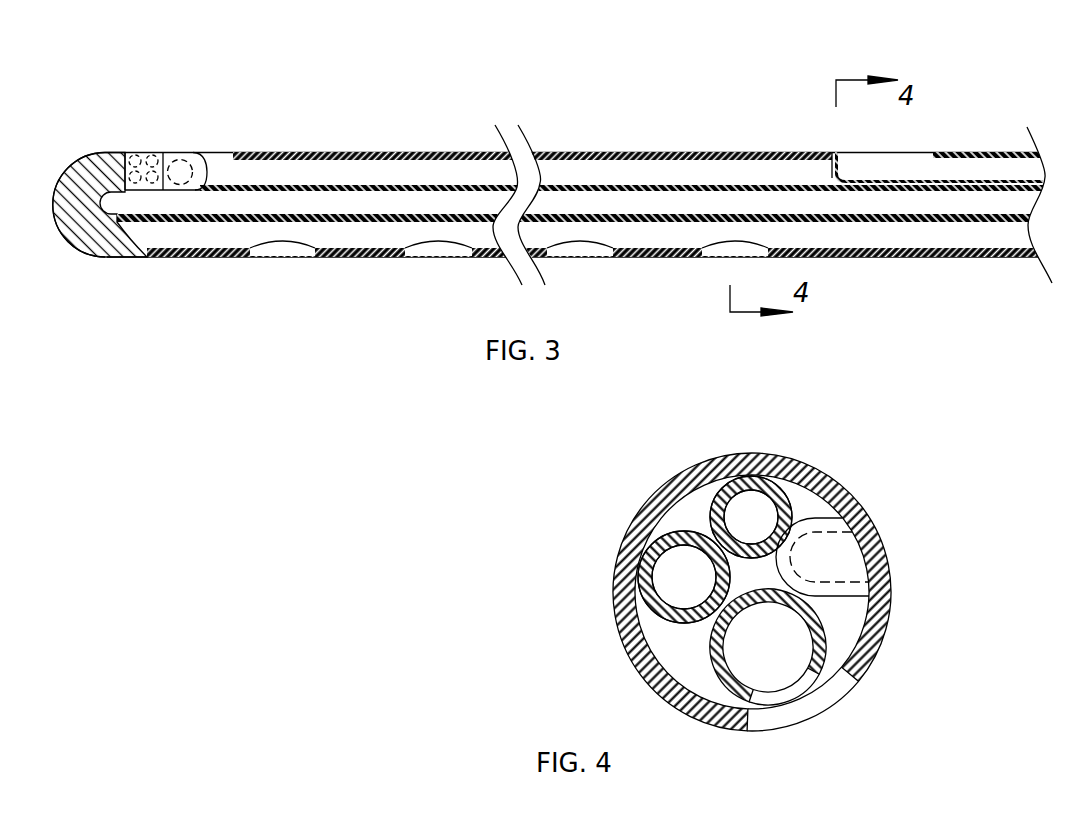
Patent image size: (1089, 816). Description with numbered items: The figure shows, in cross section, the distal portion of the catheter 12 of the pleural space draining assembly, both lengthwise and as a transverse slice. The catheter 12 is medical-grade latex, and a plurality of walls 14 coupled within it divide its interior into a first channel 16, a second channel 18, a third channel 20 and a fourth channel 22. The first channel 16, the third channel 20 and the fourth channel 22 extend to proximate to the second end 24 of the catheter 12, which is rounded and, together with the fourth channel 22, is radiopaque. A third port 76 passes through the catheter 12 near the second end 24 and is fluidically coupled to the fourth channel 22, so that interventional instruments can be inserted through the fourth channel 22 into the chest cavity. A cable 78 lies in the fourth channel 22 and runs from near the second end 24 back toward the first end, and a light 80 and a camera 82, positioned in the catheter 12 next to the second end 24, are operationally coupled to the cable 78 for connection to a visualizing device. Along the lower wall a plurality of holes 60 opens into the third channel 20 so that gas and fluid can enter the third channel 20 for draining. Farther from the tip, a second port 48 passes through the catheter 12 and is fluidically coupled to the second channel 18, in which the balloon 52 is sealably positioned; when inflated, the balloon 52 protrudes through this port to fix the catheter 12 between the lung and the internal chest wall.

In FIG. 3, the catheter 12 is at (552, 205).
In FIG. 4, the catheter 12 is at (841, 518).
In FIG. 4, the walls 14 is at (748, 592).
In FIG. 3, the first channel 16 is at (921, 203).
In FIG. 4, the first channel 16 is at (670, 582).
In FIG. 3, the second channel 18 is at (957, 167).
In FIG. 4, the second channel 18 is at (884, 550).
In FIG. 3, the third channel 20 is at (200, 242).
In FIG. 4, the third channel 20 is at (768, 668).
In FIG. 3, the fourth channel 22 is at (303, 173).
In FIG. 4, the fourth channel 22 is at (815, 518).
In FIG. 3, the second end 24 is at (62, 243).
In FIG. 3, the second port 48 is at (902, 152).
In FIG. 3, the balloon 52 is at (1003, 167).
In FIG. 3, the holes 60 is at (288, 250).
In FIG. 4, the holes 60 is at (813, 707).
In FIG. 3, the third port 76 is at (216, 152).
In FIG. 3, the cable 78 is at (641, 172).
In FIG. 3, the light 80 is at (160, 163).
In FIG. 3, the camera 82 is at (181, 160).